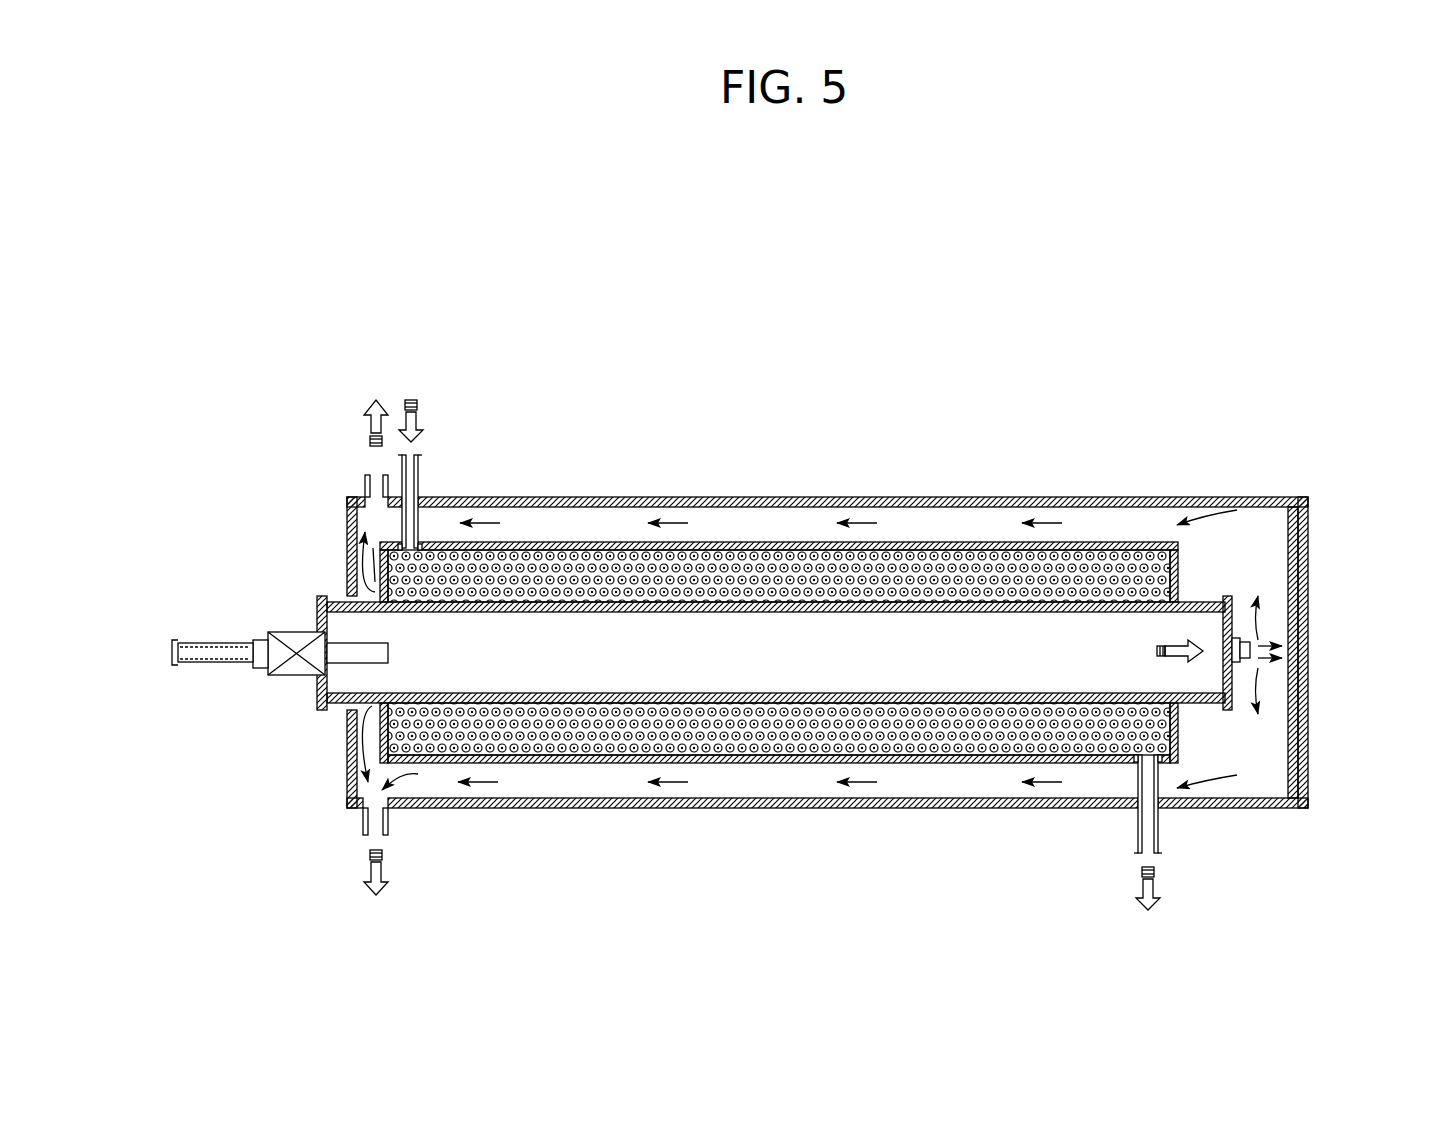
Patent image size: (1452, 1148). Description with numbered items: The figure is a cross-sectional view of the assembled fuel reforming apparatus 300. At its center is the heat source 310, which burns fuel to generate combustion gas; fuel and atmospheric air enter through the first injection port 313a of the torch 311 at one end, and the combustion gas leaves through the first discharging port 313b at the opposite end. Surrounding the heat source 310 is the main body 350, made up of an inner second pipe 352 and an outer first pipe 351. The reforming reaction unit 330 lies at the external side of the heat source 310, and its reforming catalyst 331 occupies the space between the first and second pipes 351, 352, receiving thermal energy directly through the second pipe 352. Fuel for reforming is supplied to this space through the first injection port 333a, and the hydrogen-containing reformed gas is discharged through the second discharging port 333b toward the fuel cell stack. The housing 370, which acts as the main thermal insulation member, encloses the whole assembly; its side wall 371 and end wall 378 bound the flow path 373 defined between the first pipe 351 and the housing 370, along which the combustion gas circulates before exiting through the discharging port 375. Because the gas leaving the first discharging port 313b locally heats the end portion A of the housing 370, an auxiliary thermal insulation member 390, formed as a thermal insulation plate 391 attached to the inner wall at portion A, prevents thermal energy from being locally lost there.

The fuel reforming apparatus 300 is at (815, 329).
The heat source 310 is at (293, 698).
The torch 311 is at (298, 630).
The first injection port 313a is at (256, 637).
The first discharging port 313b is at (1250, 636).
The reforming reaction unit 330 is at (568, 776).
The reforming catalyst 331 is at (583, 578).
The first injection port 333a is at (422, 537).
The second discharging port 333b is at (1138, 765).
The main body 350 is at (798, 427).
The first pipe 351 is at (788, 542).
The second pipe 352 is at (725, 595).
The housing 370 is at (1050, 490).
The housing side wall 371 is at (347, 762).
The flow path 373 is at (928, 527).
The discharging port 375 is at (363, 487).
The housing end wall 378 is at (1308, 760).
The auxiliary thermal insulation member 390 is at (1278, 540).
The thermal insulation plate 391 is at (1295, 556).
The portion A is at (1308, 706).